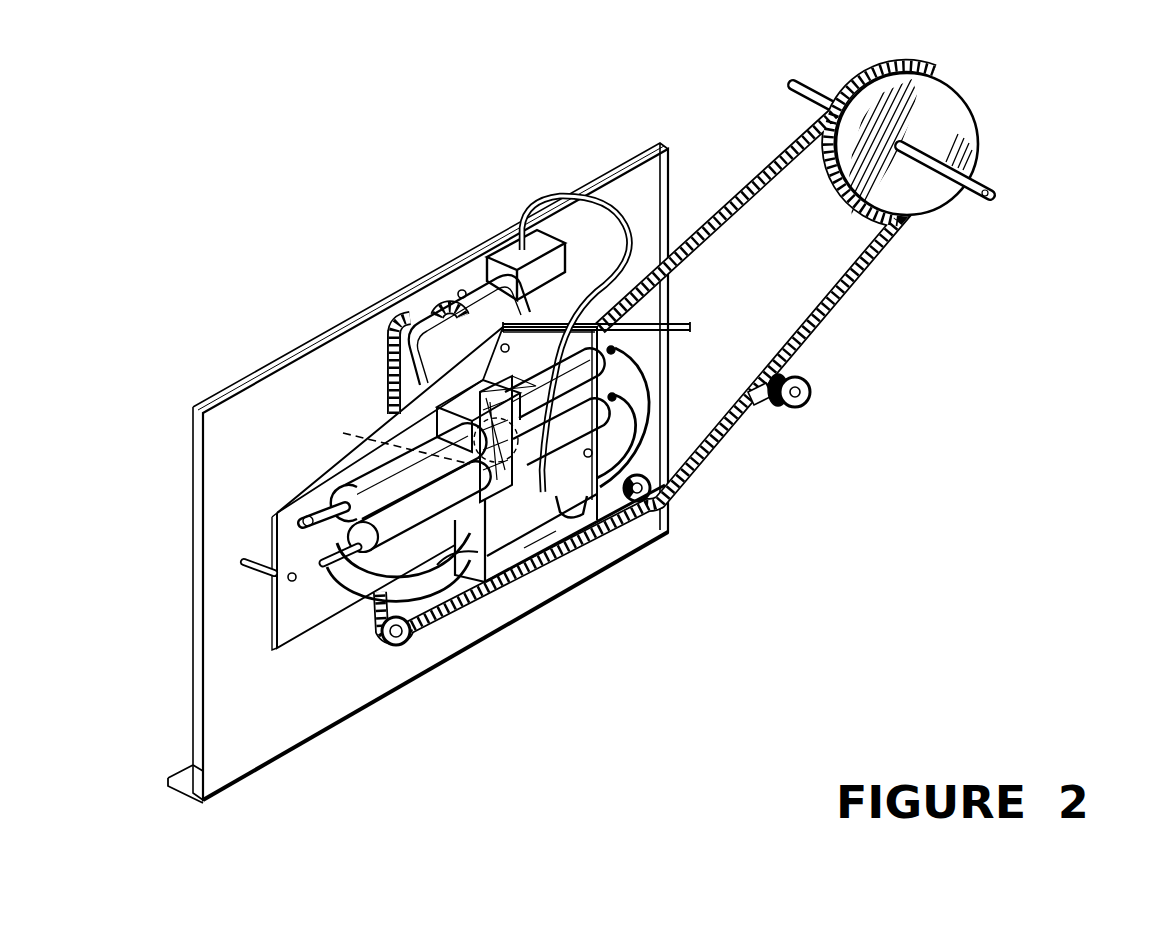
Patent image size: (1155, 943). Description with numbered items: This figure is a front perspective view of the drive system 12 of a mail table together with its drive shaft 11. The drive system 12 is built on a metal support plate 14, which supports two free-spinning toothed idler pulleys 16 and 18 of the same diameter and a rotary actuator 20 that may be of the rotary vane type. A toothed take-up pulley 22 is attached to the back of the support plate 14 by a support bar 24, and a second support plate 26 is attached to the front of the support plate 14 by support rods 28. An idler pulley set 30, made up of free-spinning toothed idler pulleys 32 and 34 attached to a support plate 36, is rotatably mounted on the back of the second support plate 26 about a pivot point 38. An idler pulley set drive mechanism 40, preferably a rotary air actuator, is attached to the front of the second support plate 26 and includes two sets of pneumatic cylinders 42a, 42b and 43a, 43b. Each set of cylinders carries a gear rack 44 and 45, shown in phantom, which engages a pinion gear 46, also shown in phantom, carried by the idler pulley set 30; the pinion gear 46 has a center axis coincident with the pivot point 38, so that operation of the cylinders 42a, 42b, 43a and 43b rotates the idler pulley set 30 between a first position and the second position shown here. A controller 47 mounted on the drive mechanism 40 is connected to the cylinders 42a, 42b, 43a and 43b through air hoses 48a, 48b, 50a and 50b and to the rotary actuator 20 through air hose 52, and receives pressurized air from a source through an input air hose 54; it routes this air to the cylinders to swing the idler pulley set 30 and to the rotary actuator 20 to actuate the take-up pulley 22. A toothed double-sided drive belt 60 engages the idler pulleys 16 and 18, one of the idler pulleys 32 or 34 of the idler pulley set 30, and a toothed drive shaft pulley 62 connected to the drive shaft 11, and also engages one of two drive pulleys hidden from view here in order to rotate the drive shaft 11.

The drive shaft 11 is at (975, 181).
The drive system 12 is at (249, 205).
The support plate 14 is at (216, 410).
The idler pulley 16 is at (400, 650).
The idler pulley 18 is at (663, 493).
The rotary actuator 20 is at (546, 265).
The take-up pulley 22 is at (800, 404).
The support bar 24 is at (754, 398).
The second support plate 26 is at (285, 642).
The support rods 28 is at (268, 580).
The idler pulley set 30 is at (411, 288).
The idler pulley 32 is at (462, 291).
The idler pulley 34 is at (403, 333).
The support plate 36 is at (460, 364).
The pivot point 38 is at (588, 538).
The idler pulley set drive mechanism 40 is at (438, 422).
The pneumatic cylinder 42a is at (394, 474).
The pneumatic cylinder 42b is at (600, 352).
The pneumatic cylinder 43a is at (362, 592).
The pneumatic cylinder 43b is at (622, 414).
The gear rack 44 is at (505, 427).
The gear rack 45 is at (494, 523).
The pinion gear 46 is at (385, 439).
The controller 47 is at (535, 539).
The air hose 48a is at (372, 605).
The air hose 48b is at (632, 377).
The air hose 50a is at (456, 606).
The air hose 50b is at (651, 393).
The air hose 52 is at (560, 197).
The input air hose 54 is at (603, 523).
The double-sided drive belt 60 is at (748, 185).
The drive shaft pulley 62 is at (945, 124).